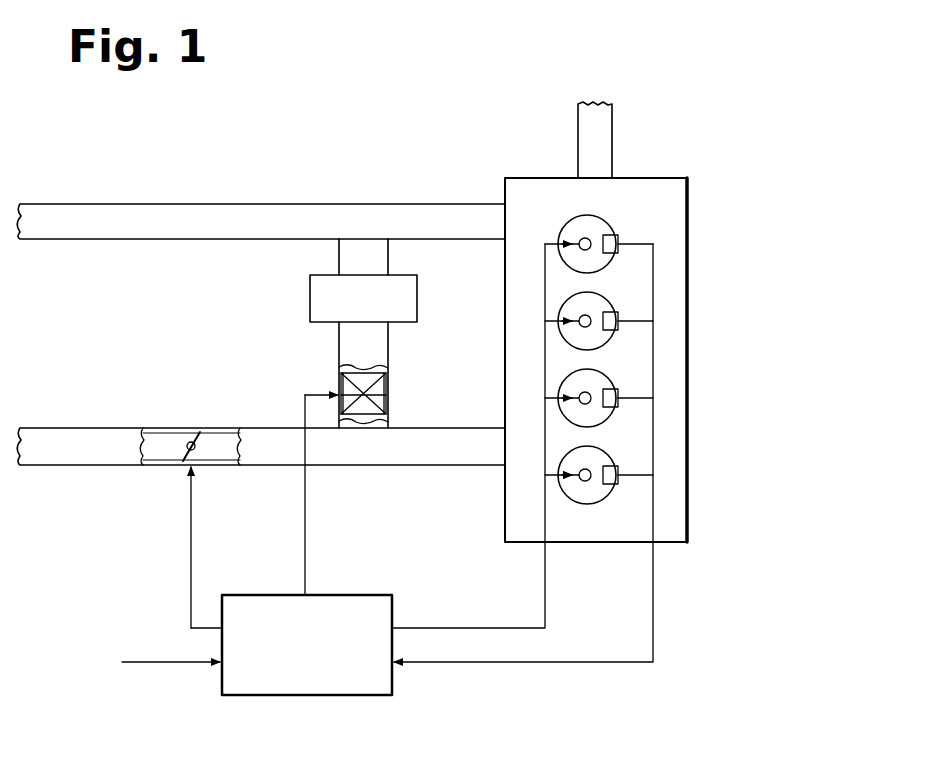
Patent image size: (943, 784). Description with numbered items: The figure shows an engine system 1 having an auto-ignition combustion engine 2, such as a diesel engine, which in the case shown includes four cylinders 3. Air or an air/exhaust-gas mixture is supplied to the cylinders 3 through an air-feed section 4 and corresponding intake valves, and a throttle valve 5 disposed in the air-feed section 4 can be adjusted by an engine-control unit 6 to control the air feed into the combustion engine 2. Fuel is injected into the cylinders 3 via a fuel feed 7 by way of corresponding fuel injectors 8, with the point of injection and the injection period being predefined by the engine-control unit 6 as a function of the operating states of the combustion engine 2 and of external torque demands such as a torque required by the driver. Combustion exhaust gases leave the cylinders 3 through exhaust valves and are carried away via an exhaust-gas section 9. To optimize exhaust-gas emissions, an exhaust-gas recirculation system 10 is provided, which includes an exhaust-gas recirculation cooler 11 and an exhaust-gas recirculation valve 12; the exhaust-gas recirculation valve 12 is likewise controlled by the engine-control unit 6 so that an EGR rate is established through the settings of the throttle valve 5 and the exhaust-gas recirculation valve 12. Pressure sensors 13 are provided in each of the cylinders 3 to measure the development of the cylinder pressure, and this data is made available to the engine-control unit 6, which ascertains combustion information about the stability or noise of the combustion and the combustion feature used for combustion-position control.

The engine system 1 is at (745, 115).
The combustion engine 2 is at (596, 522).
The cylinders 3 is at (595, 230).
The air-feed section 4 is at (258, 447).
The throttle valve 5 is at (188, 428).
The engine-control unit 6 is at (312, 665).
The fuel feed 7 is at (598, 122).
The fuel injectors 8 is at (585, 240).
The exhaust-gas section 9 is at (307, 218).
The exhaust-gas recirculation system 10 is at (290, 245).
The exhaust-gas recirculation cooler 11 is at (398, 300).
The exhaust-gas recirculation valve 12 is at (378, 395).
The pressure sensors 13 is at (618, 243).